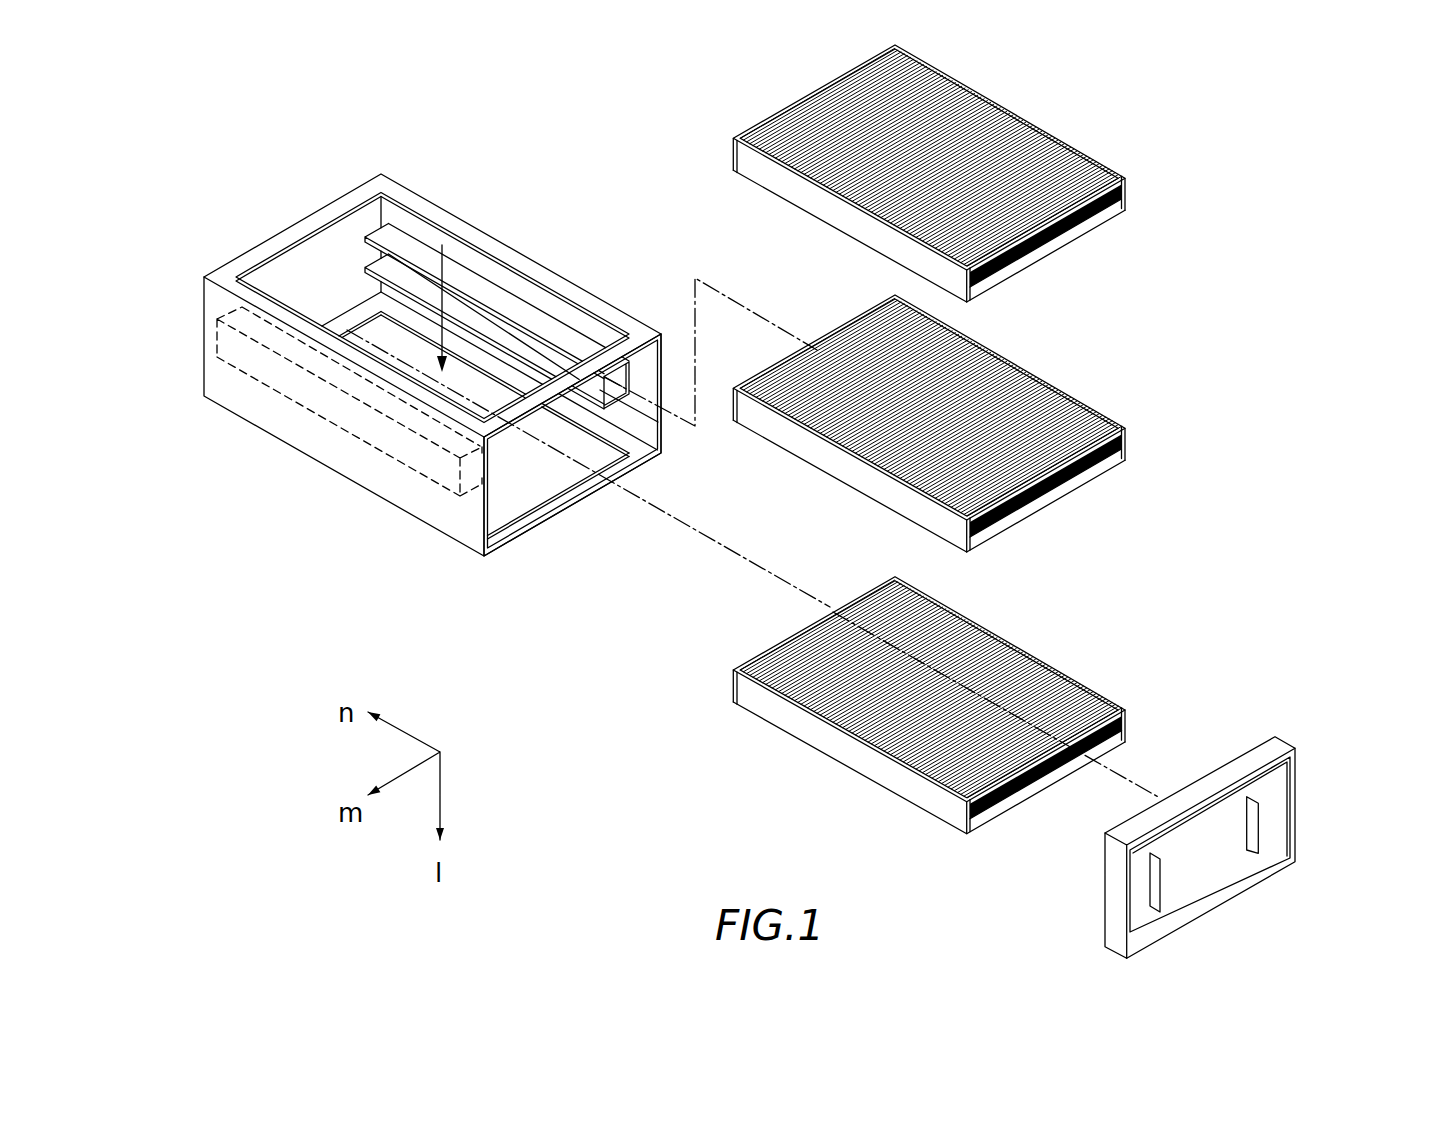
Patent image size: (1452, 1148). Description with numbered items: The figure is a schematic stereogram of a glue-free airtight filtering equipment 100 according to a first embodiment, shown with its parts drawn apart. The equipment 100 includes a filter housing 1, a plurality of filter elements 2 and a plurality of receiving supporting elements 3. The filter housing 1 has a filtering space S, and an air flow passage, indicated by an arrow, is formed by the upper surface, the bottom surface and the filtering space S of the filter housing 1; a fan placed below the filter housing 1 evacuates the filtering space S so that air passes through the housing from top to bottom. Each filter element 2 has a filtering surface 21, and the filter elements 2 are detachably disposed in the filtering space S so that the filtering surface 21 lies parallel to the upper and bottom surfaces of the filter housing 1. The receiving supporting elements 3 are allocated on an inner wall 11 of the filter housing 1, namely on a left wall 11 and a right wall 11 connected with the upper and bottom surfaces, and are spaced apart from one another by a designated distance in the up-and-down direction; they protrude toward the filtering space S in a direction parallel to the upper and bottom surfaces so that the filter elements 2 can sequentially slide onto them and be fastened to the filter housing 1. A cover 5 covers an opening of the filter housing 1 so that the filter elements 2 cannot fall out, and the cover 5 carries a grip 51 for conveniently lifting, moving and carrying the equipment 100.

The glue-free airtight filtering equipment 100 is at (1303, 162).
The filter housing 1 is at (362, 520).
The inner wall 11 is at (650, 433).
The filtering space S is at (528, 470).
The receiving supporting elements 3 is at (525, 318).
The filter elements 2 is at (1133, 181).
The filtering surface 21 is at (1035, 142).
The cover 5 is at (1230, 853).
The grip 51 is at (1162, 872).